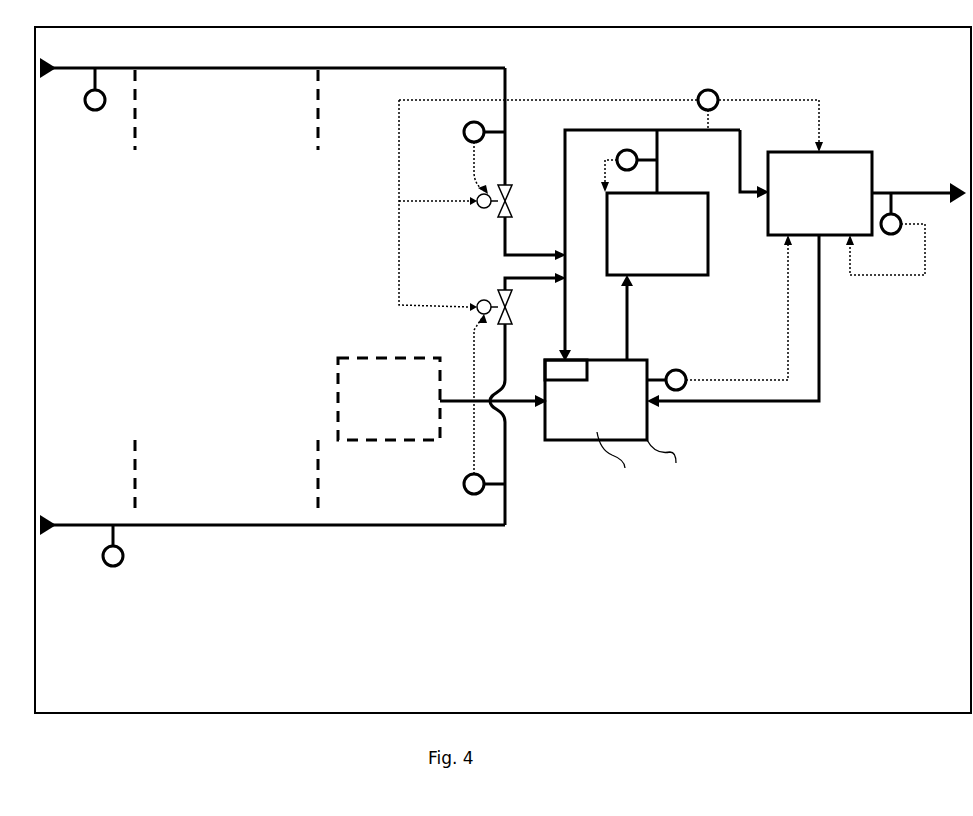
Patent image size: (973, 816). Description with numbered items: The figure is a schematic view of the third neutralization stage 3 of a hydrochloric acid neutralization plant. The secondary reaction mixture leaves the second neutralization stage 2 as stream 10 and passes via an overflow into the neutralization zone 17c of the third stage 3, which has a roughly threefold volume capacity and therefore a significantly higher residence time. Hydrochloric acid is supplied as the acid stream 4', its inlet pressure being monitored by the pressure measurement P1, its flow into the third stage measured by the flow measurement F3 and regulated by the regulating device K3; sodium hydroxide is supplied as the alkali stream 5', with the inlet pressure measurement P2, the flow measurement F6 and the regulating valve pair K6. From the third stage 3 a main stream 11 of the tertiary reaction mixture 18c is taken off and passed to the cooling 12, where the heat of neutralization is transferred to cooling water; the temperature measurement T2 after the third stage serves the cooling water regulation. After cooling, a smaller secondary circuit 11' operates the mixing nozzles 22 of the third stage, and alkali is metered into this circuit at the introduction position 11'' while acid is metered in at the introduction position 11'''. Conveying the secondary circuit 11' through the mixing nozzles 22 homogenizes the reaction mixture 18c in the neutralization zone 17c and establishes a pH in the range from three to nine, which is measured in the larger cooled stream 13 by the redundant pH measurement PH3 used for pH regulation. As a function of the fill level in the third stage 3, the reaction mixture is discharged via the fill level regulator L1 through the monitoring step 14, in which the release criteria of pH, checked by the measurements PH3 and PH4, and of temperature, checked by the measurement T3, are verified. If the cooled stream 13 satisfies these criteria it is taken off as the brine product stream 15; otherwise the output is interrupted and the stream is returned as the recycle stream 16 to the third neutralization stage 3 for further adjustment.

The hydrochloric acid stream 4' is at (272, 121).
The sodium hydroxide stream 5' is at (272, 484).
The inlet pressure measurement for hydrochloric acid P1 is at (91, 97).
The inlet pressure measurement for sodium hydroxide P2 is at (110, 554).
The flow measurement for hydrochloric acid inflow into third neutralization stage F3 is at (473, 156).
The regulating device for hydrochloric acid inflow into third neutralization stage K3 is at (455, 198).
The regulating valve pair for sodium hydroxide inflow into third neutralization stag K6 is at (455, 218).
The flow measurement of sodium hydroxide inflow into third neutralization stage F6 is at (473, 407).
The metered addition of hydrochloric acid into secondary circuit of the third neutra 11''' is at (522, 238).
The metered addition of sodium hydroxide into secondary circuit of the third neutral 11'' is at (525, 283).
The smaller secondary circuit of neutralized hydrochloric acid of stream 11 11' is at (649, 245).
The reaction mixture exiting from the third stage 11 is at (635, 317).
The reaction mixture exiting from the second stage 10 is at (493, 406).
The second neutralization stage 2 is at (389, 399).
The third neutralization stage 3 is at (596, 410).
The mixing nozzles of the third stage 22 is at (566, 370).
The cooling of the third neutralization stage 12 is at (657, 202).
The cooled reaction mixture of the third stage 13 is at (749, 170).
The monitoring of the release criteria or quality of the product stream 14 is at (820, 193).
The discharged product stream from the neutralization in the quality window 15 is at (919, 196).
The recirculated reaction mixture outside the quality window 16 is at (733, 326).
The tertiary reaction mixture of the third stage 18c is at (618, 462).
The neutralization zone of the third stage 17c is at (670, 462).
The temperature measurement after third neutralization stage for cooling water regul T2 is at (629, 164).
The monitoring of target temperature T3 is at (886, 234).
The pH measurement after third neutralization stage for pH regulation PH3 is at (611, 113).
The monitoring of target pH PH4 is at (886, 234).
The fill level regulator L1 is at (719, 312).